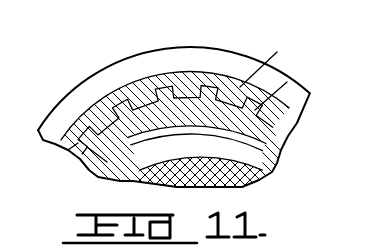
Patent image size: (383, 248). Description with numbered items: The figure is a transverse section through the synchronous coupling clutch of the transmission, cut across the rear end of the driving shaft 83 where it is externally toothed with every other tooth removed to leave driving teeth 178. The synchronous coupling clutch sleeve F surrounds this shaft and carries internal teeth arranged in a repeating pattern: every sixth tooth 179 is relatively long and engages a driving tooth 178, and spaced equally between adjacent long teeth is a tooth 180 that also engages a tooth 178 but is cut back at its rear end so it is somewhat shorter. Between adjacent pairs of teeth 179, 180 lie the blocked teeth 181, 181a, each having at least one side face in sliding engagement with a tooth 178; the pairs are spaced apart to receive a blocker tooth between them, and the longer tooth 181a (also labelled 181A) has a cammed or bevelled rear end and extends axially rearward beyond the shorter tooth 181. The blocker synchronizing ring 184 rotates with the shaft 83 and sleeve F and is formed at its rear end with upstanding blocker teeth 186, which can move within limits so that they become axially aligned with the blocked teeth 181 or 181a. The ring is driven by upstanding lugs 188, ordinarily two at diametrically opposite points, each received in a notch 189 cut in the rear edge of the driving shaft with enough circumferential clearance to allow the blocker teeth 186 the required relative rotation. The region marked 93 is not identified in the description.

The tooth 180 is at (147, 86).
The blocked tooth 181 is at (173, 88).
The blocker tooth 186 is at (200, 42).
The blocked tooth 181A is at (213, 80).
The blocked tooth 181a is at (110, 102).
The tooth 179 is at (36, 129).
The driving tooth 178 is at (128, 145).
The lug 188 is at (190, 105).
The notch 189 is at (220, 105).
The bottom edge 93 is at (208, 178).
The shaft 83 is at (76, 160).
The blocker synchronizing ring 184 is at (95, 173).
The synchronous coupling clutch sleeve F is at (55, 158).